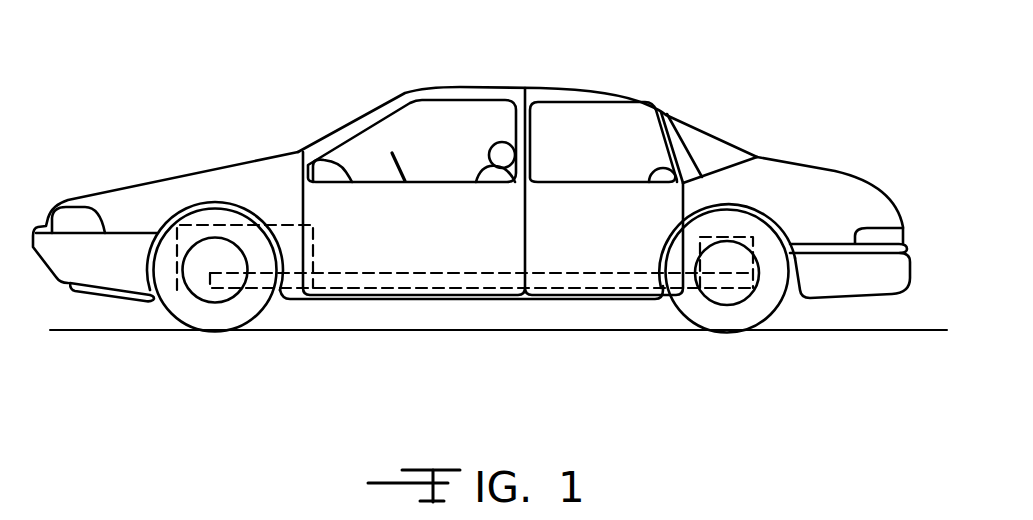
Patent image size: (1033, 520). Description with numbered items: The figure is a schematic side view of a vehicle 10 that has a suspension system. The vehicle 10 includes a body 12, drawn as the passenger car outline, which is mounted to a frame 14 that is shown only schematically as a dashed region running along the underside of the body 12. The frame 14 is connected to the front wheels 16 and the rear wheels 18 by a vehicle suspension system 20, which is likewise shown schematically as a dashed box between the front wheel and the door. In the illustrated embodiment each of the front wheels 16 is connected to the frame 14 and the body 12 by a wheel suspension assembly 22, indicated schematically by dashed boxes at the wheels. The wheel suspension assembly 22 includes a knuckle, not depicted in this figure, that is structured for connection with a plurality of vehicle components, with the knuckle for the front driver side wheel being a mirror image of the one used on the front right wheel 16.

The vehicle 10 is at (167, 107).
The body 12 is at (273, 177).
The frame 14 is at (380, 300).
The front wheel 16 is at (185, 305).
The rear wheel 18 is at (728, 323).
The vehicle suspension system 20 is at (318, 240).
The wheel suspension assembly 22 is at (200, 218).